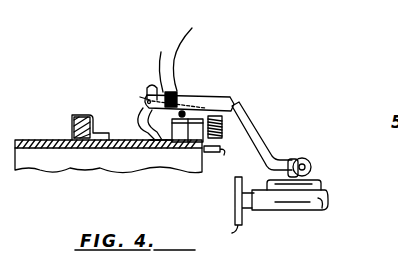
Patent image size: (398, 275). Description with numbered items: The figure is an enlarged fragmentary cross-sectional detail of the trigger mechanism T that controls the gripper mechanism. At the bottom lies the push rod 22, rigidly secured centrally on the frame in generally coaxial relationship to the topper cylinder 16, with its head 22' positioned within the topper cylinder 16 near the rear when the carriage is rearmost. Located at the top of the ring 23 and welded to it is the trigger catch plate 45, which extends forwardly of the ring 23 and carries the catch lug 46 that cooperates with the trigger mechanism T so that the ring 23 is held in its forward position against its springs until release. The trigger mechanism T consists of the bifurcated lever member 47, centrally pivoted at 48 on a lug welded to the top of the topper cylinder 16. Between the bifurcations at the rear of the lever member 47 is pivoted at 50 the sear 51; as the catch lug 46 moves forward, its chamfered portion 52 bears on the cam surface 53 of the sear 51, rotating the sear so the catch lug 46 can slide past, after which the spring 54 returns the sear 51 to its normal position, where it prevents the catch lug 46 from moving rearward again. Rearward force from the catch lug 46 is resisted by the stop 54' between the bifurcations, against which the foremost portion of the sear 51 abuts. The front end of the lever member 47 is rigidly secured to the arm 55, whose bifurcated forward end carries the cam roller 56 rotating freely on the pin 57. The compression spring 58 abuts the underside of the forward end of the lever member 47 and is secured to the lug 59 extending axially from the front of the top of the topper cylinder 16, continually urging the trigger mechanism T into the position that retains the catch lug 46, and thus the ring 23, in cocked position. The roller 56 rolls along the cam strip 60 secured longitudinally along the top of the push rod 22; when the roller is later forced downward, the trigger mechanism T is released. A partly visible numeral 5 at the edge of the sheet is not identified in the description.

The topper cylinder 16 is at (25, 139).
The ring 23 is at (72, 124).
The trigger catch plate 45 is at (116, 138).
The catch lug 46 is at (152, 142).
The lever member 47 is at (193, 107).
The pivot 48 is at (185, 92).
The sear pivot 50 is at (156, 105).
The sear 51 is at (150, 99).
The chamfered portion 52 is at (158, 136).
The cam surface 53 is at (170, 143).
The spring 54 is at (164, 62).
The stop 54' is at (191, 51).
The trigger mechanism T is at (240, 89).
The arm 55 is at (254, 131).
The cam roller 56 is at (302, 158).
The pin 57 is at (309, 167).
The compression spring 58 is at (244, 113).
The lug 59 is at (218, 148).
The cam strip 60 is at (321, 187).
The push rod 22 is at (290, 219).
The head 22' is at (236, 220).
The partial numeral 5 is at (3, 188).